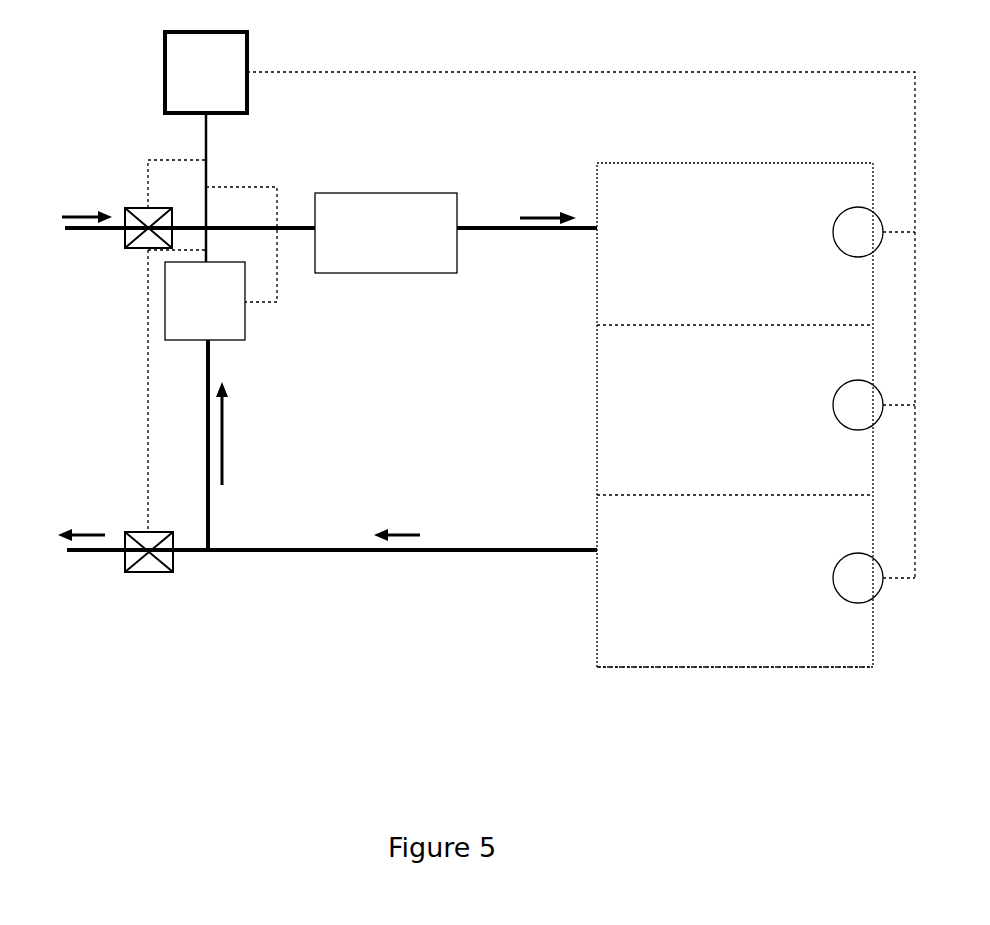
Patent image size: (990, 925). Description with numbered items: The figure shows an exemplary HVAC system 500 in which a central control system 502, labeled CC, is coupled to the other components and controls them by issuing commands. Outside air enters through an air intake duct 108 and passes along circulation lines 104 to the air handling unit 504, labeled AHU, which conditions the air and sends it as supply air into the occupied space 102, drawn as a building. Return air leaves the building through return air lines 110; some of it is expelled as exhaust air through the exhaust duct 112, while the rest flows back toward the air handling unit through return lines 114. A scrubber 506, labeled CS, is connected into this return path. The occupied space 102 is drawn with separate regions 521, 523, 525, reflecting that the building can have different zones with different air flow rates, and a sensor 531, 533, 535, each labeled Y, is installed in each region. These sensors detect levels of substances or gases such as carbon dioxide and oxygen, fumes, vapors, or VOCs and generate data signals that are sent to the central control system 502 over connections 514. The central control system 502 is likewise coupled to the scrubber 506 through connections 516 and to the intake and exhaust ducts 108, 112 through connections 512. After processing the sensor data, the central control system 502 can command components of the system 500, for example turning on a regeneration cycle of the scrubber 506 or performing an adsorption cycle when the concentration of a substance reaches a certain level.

The HVAC system 500 is at (707, 55).
The central control system 502 is at (253, 45).
The air handling unit 504 is at (385, 193).
The scrubber 506 is at (247, 335).
The connections to ducts 512 is at (148, 385).
The connections to sensors 514 is at (403, 72).
The connections to scrubber 516 is at (217, 187).
The first building zone 521 is at (596, 272).
The second building zone 523 is at (596, 373).
The third building zone 525 is at (596, 600).
The sensor 531 is at (880, 225).
The sensor 533 is at (880, 397).
The sensor 535 is at (880, 570).
The occupied space 102 is at (665, 163).
The circulation lines 104 is at (488, 228).
The air intake duct 108 is at (147, 208).
The return air lines 110 is at (521, 548).
The exhaust duct 112 is at (150, 572).
The return lines 114 is at (210, 496).